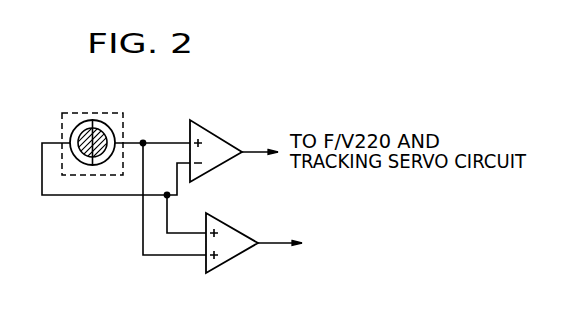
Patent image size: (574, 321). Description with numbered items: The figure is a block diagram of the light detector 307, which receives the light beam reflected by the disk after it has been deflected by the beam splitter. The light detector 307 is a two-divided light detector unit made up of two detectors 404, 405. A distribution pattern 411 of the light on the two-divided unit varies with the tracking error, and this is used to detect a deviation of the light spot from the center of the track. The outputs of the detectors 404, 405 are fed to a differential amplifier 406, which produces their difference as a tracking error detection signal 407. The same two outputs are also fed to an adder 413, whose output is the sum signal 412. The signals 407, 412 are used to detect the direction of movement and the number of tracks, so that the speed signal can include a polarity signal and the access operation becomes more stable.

The light detector 307 is at (124, 122).
The detector 404 is at (77, 123).
The detector 405 is at (107, 122).
The distribution pattern 411 is at (98, 157).
The differential amplifier 406 is at (228, 137).
The tracking error detection signal 407 is at (258, 153).
The adder 413 is at (243, 233).
The sum signal 412 is at (273, 245).